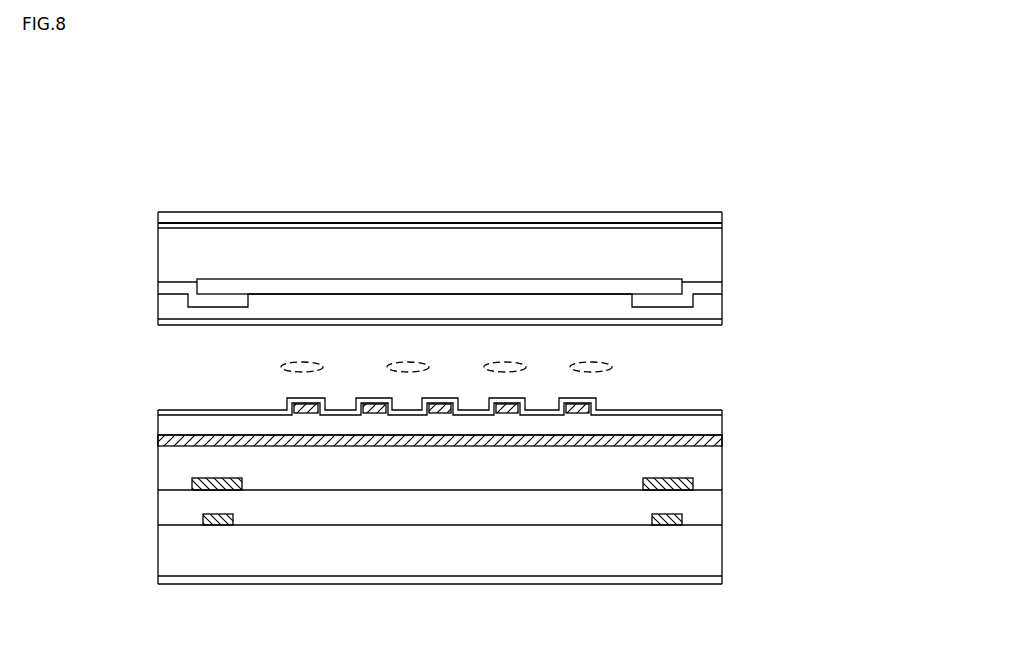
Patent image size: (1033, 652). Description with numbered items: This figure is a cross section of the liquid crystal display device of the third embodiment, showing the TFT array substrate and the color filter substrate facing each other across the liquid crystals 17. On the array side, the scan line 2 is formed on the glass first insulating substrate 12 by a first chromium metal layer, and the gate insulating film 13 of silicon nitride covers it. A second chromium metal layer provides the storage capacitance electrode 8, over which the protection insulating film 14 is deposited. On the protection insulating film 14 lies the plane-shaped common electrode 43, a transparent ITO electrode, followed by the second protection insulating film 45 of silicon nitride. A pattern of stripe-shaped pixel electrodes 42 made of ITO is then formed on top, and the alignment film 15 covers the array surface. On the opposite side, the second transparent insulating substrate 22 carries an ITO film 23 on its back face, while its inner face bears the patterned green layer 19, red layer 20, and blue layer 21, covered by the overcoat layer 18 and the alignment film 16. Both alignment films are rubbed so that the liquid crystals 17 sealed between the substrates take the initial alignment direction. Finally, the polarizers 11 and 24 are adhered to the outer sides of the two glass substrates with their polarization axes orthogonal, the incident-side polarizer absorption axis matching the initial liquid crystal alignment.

The scan line 2 is at (208, 528).
The storage capacitance electrode 8 is at (197, 492).
The polarizer 11 is at (520, 578).
The first insulating substrate 12 is at (707, 553).
The gate insulating film 13 is at (707, 512).
The protection insulating film 14 is at (703, 472).
The alignment film 15 is at (197, 410).
The alignment film 16 is at (181, 326).
The liquid crystals 17 is at (600, 362).
The overcoat layer 18 is at (715, 306).
The green (G) layer 19 is at (351, 288).
The red (R) layer 20 is at (175, 286).
The blue (B) layer 21 is at (705, 284).
The second transparent insulating substrate 22 is at (448, 251).
The ITO film 23 is at (600, 223).
The polarizer 24 is at (537, 217).
The stripe-shaped pixel electrodes 42 is at (298, 403).
The plane-shaped common electrode 43 is at (163, 441).
The second protection insulating film 45 is at (168, 425).